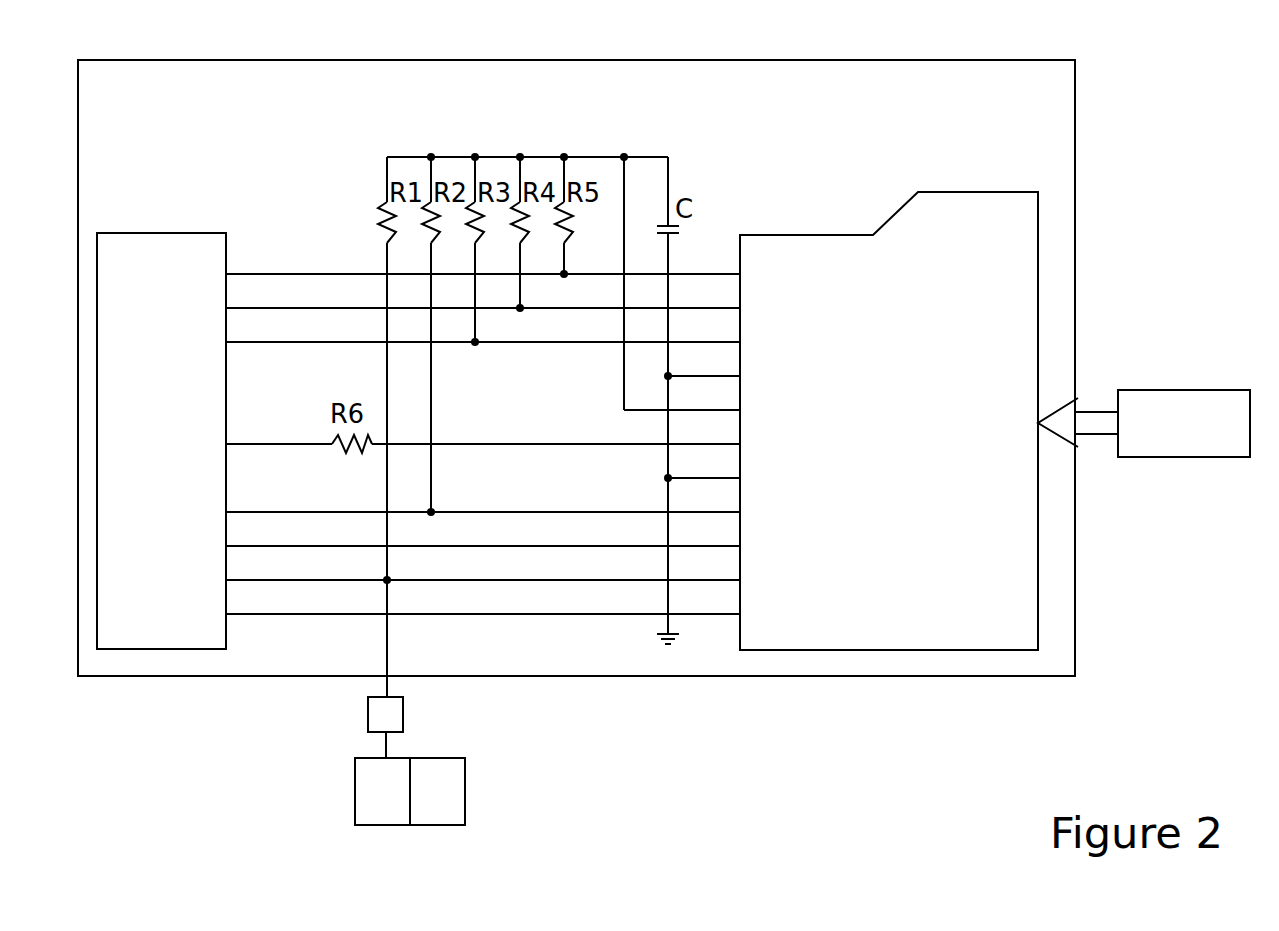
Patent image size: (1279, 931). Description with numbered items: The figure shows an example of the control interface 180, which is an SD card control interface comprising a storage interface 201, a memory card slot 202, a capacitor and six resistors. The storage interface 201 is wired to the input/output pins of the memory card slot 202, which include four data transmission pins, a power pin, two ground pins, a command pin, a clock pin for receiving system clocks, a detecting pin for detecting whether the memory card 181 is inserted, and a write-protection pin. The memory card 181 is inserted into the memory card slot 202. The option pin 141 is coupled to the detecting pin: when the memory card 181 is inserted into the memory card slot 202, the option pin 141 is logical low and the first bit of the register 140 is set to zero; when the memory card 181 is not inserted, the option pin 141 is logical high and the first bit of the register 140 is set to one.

The control interface 180 is at (341, 93).
The storage interface 201 is at (161, 233).
The memory card slot 202 is at (806, 235).
The memory card 181 is at (1183, 390).
The option pin 141 is at (368, 712).
The register 140 is at (355, 790).